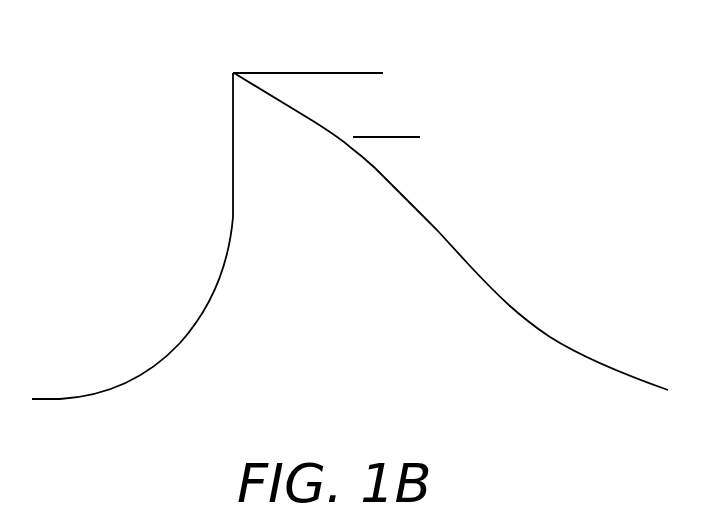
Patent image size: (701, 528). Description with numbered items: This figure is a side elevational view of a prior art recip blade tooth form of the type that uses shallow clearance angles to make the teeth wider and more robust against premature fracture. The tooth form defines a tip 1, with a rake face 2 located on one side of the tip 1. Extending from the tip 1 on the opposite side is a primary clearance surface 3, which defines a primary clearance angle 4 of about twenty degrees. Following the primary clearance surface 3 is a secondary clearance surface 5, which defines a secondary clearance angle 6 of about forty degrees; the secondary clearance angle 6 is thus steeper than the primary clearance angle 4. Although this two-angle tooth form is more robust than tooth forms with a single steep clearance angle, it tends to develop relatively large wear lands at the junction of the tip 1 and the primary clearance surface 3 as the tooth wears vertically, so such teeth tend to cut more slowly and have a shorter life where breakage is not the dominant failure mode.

The tip 1 is at (234, 72).
The rake face 2 is at (233, 118).
The primary clearance surface 3 is at (280, 133).
The primary clearance angle 4 is at (297, 73).
The secondary clearance surface 5 is at (372, 217).
The secondary clearance angle 6 is at (400, 137).